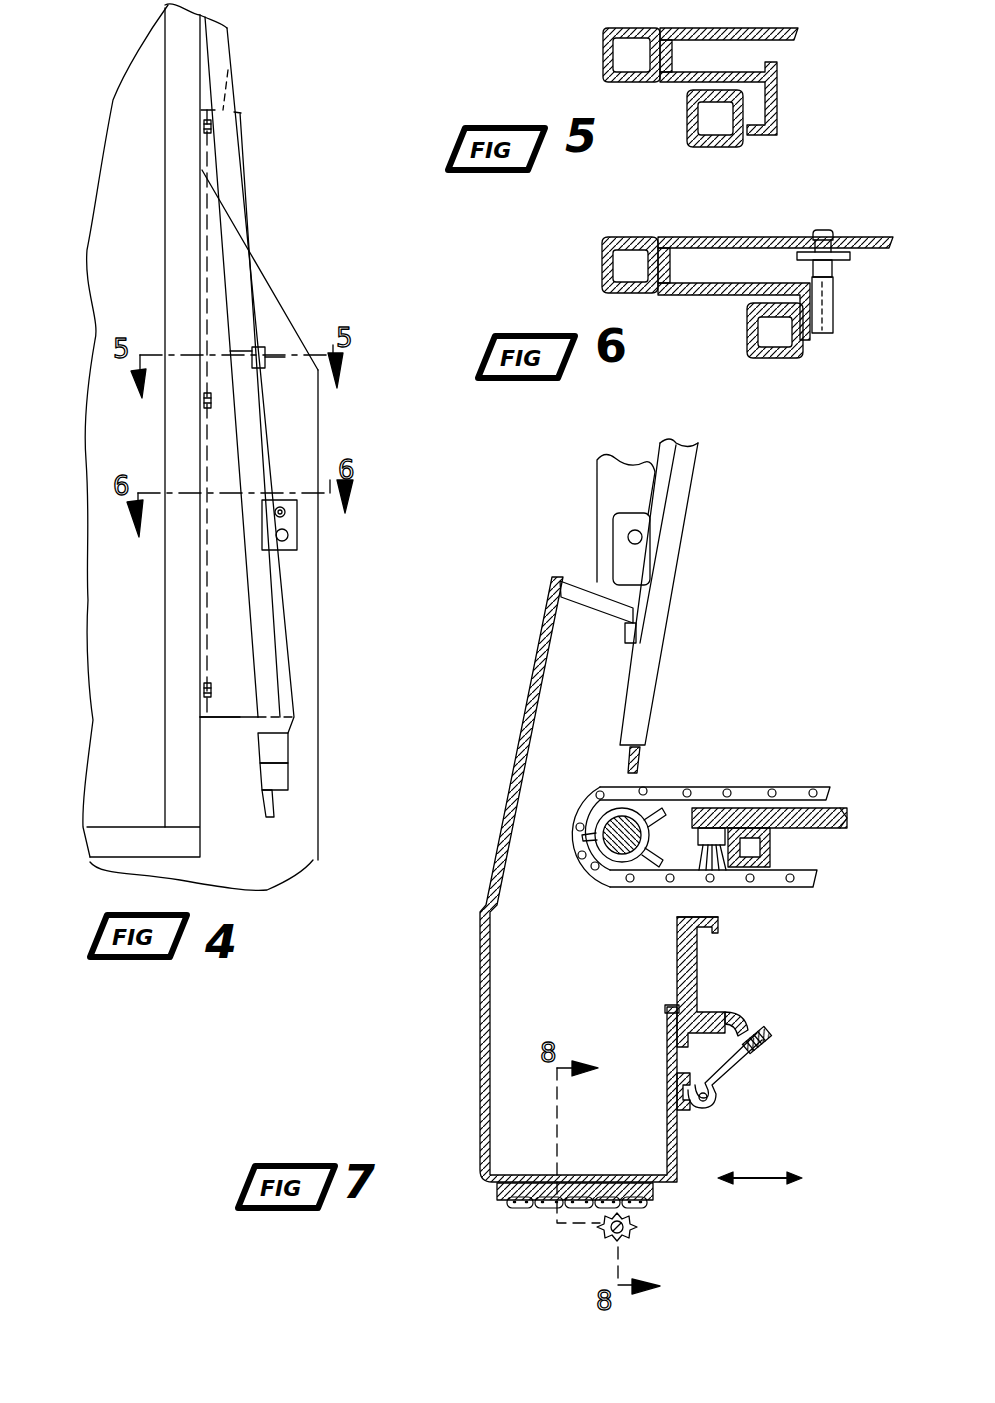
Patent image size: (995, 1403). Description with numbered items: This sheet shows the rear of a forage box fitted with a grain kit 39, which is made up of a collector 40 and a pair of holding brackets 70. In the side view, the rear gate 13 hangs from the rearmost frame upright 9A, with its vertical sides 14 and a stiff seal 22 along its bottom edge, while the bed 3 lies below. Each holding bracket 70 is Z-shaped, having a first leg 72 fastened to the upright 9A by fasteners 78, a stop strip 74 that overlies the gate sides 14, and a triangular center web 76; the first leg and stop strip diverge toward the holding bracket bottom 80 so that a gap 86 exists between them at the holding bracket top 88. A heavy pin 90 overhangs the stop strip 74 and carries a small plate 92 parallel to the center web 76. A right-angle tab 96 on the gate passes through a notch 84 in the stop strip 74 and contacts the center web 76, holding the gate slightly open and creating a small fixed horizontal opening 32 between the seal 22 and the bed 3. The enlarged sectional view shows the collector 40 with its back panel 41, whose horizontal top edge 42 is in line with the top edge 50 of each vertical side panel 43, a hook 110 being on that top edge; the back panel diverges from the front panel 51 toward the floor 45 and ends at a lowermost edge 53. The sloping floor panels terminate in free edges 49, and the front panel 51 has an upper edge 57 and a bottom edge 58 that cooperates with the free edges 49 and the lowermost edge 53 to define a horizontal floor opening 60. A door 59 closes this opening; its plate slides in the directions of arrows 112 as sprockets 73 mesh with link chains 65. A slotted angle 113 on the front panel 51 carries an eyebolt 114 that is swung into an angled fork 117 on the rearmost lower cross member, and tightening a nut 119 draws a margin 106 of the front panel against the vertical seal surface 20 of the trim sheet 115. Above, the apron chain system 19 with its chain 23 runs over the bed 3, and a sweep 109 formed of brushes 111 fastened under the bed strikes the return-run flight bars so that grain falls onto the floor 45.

In FIG. 4, the bed 3 is at (133, 847).
In FIG. 7, the bed 3 is at (847, 818).
In FIG. 4, the rearmost frame upright 9A is at (180, 638).
In FIG. 5, the rear gate 13 is at (709, 149).
In FIG. 6, the vertical sides of rear gate 14 is at (783, 300).
In FIG. 7, the apron chain system 19 is at (797, 786).
In FIG. 7, the vertical seal surface 20 is at (680, 945).
In FIG. 4, the stiff seal 22 is at (270, 803).
In FIG. 7, the chain 23 is at (733, 790).
In FIG. 4, the horizontal opening 32 is at (233, 840).
In FIG. 7, the grain kit 39 is at (490, 893).
In FIG. 7, the collector 40 is at (479, 1050).
In FIG. 7, the back panel 41 is at (480, 1008).
In FIG. 7, the horizontal top edge 42 is at (560, 580).
In FIG. 7, the vertical side panel 43 is at (548, 928).
In FIG. 7, the floor 45 is at (638, 1178).
In FIG. 7, the free edge 49 is at (590, 1180).
In FIG. 7, the top edge of side panel 50 is at (587, 580).
In FIG. 7, the front panel 51 is at (680, 1130).
In FIG. 7, the lowermost edge 53 is at (497, 1182).
In FIG. 7, the upper edge of front panel 57 is at (674, 1008).
In FIG. 7, the bottom edge of front panel 58 is at (676, 1183).
In FIG. 7, the door 59 is at (503, 1206).
In FIG. 7, the horizontal floor opening 60 is at (510, 1180).
In FIG. 7, the link chain 65 is at (648, 1208).
In FIG. 4, the holding bracket 70 is at (250, 211).
In FIG. 5, the first leg 72 is at (668, 52).
In FIG. 7, the sprocket 73 is at (607, 1240).
In FIG. 6, the stop strip 74 is at (803, 337).
In FIG. 4, the center web 76 is at (240, 705).
In FIG. 6, the center web 76 is at (728, 293).
In FIG. 4, the fastener 78 is at (218, 134).
In FIG. 4, the holding bracket bottom 80 is at (285, 717).
In FIG. 5, the notch 84 is at (777, 72).
In FIG. 4, the gap 86 is at (240, 113).
In FIG. 4, the holding bracket top 88 is at (230, 63).
In FIG. 4, the pin 90 is at (283, 543).
In FIG. 6, the pin 90 is at (834, 327).
In FIG. 7, the pin 90 is at (642, 535).
In FIG. 4, the small plate 92 is at (292, 522).
In FIG. 4, the right-angle tab 96 is at (262, 350).
In FIG. 7, the margin 106 is at (665, 1016).
In FIG. 7, the sweep 109 is at (712, 828).
In FIG. 7, the hook 110 is at (606, 525).
In FIG. 7, the brush 111 is at (728, 868).
In FIG. 7, the arrows 112 is at (760, 1170).
In FIG. 7, the angle 113 is at (677, 1090).
In FIG. 7, the eyebolt 114 is at (720, 1082).
In FIG. 7, the trim sheet 115 is at (676, 918).
In FIG. 7, the angled fork 117 is at (705, 1013).
In FIG. 7, the nut 119 is at (758, 1030).